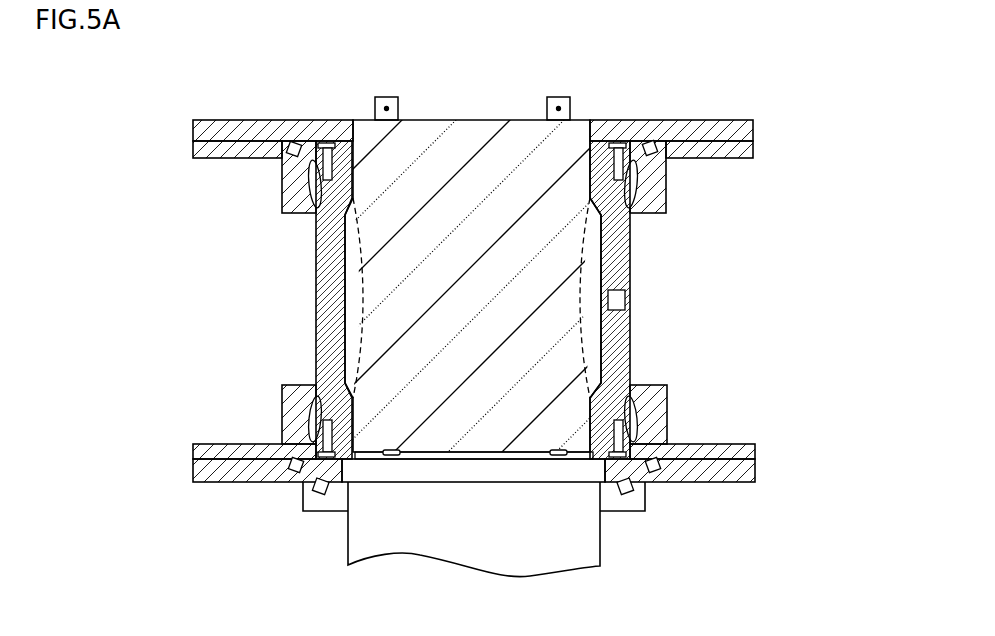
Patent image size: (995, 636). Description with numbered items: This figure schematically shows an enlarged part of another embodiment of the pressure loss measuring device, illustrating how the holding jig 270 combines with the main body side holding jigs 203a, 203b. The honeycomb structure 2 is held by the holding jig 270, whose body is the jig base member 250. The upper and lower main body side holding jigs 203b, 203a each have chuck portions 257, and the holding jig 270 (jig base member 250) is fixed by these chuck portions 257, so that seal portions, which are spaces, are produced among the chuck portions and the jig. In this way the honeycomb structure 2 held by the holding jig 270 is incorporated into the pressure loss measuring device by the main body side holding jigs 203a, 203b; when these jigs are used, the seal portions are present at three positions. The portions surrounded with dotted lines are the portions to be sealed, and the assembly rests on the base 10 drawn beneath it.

The honeycomb structure 2 is at (477, 130).
The substrate 10 is at (585, 545).
The main body side holding jig 203a is at (758, 435).
The main body side holding jig 203b is at (758, 112).
The chuck portion 257 is at (683, 168).
The holding jig 270 is at (633, 333).
The jig base member 250 is at (544, 300).